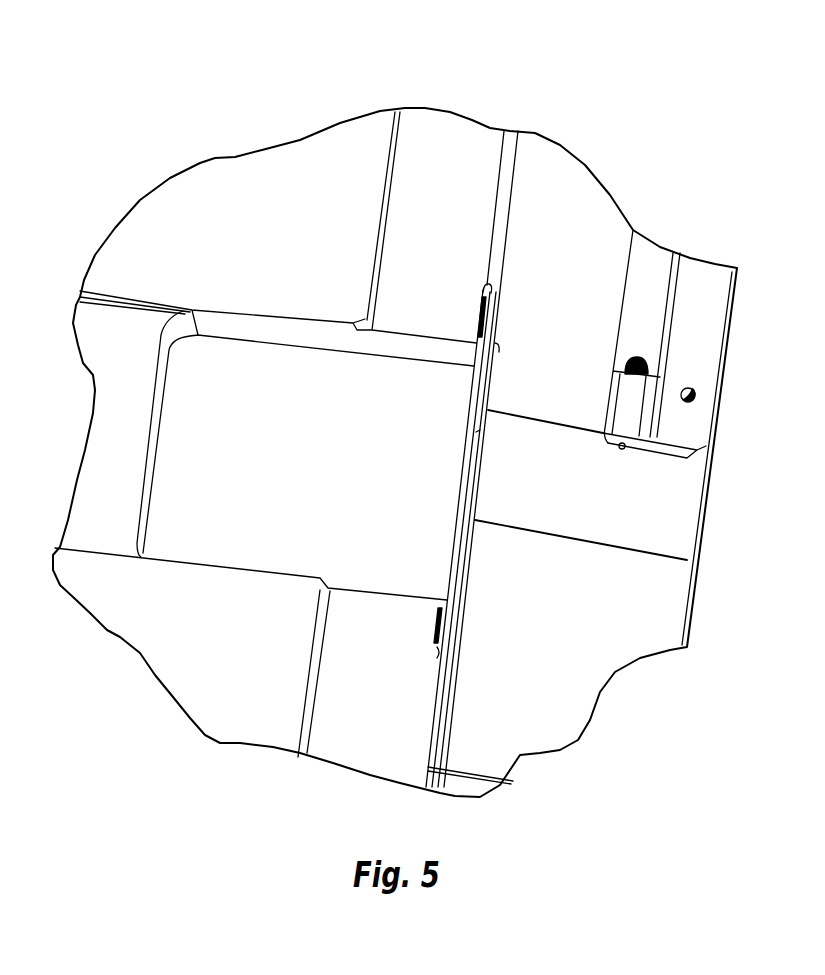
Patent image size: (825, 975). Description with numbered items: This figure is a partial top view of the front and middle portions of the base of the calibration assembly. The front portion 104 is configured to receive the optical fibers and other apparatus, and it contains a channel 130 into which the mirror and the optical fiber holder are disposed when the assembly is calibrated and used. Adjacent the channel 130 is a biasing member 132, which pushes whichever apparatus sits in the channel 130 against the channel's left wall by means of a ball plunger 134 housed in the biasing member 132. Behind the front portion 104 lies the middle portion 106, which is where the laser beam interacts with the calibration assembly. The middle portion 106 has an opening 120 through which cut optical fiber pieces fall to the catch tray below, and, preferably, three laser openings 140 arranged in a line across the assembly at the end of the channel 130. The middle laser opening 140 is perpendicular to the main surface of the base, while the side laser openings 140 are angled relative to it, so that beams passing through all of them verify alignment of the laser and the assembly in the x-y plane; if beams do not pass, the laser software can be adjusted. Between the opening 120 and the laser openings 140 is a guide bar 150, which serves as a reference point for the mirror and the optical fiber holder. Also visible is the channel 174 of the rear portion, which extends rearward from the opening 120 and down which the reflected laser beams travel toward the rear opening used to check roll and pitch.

The middle portion 106 is at (448, 101).
The front portion 104 is at (577, 197).
The opening 120 is at (294, 372).
The channel 174 is at (138, 412).
The guide bar 150 is at (446, 560).
The laser openings 140 is at (489, 362).
The channel 130 is at (688, 500).
The biasing member 132 is at (704, 400).
The ball plunger 134 is at (623, 447).